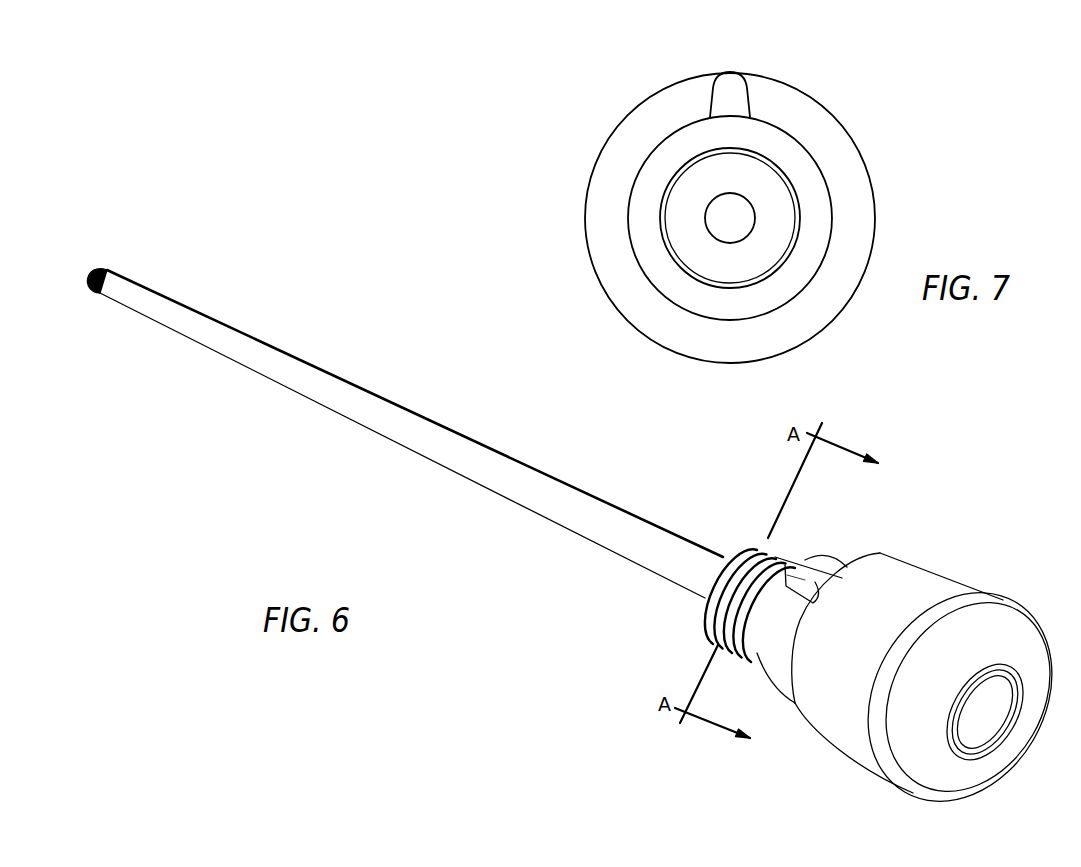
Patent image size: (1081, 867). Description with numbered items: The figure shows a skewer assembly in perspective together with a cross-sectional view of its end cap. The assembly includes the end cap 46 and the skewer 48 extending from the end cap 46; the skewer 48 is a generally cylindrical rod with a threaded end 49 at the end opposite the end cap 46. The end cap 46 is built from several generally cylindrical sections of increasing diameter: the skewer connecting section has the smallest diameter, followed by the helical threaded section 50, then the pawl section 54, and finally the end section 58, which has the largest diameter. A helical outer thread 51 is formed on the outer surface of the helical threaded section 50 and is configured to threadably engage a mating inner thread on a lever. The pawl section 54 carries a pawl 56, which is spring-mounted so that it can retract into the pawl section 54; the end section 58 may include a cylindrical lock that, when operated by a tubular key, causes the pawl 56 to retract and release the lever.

In FIG. 6, the end cap 46 is at (975, 552).
In FIG. 7, the skewer 48 is at (755, 210).
In FIG. 6, the skewer 48 is at (362, 400).
In FIG. 6, the threaded end 49 is at (108, 265).
In FIG. 7, the helical threaded section 50 is at (660, 238).
In FIG. 6, the helical threaded section 50 is at (740, 548).
In FIG. 6, the helical outer thread 51 is at (773, 550).
In FIG. 7, the pawl section 54 is at (640, 188).
In FIG. 6, the pawl section 54 is at (837, 567).
In FIG. 7, the pawl 56 is at (731, 82).
In FIG. 6, the pawl 56 is at (800, 575).
In FIG. 7, the end section 58 is at (642, 115).
In FIG. 6, the end section 58 is at (840, 692).